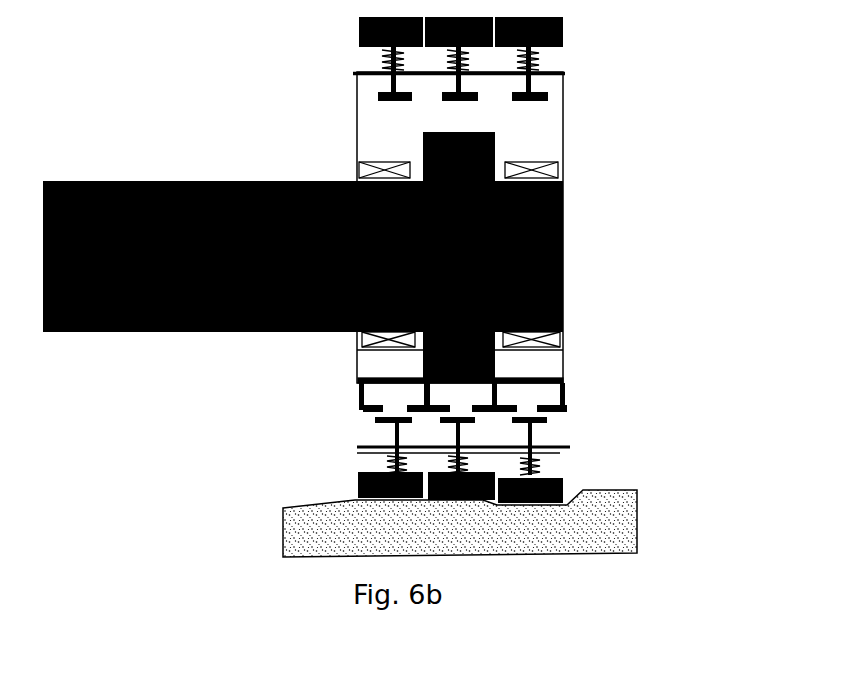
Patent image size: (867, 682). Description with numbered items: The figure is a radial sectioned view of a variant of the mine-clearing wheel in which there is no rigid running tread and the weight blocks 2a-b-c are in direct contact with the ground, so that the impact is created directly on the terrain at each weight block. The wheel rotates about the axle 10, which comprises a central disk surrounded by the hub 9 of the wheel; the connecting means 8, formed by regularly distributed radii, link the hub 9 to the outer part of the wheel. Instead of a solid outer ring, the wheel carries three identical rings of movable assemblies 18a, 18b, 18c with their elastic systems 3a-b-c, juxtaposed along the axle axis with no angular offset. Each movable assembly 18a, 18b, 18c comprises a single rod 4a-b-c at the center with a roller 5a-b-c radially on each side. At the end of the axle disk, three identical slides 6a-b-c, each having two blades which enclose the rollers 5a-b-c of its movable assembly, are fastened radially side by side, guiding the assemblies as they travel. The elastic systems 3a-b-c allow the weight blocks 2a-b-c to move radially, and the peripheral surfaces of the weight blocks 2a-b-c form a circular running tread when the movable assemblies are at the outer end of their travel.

The connecting means 8 is at (568, 135).
The central hub 9 is at (373, 167).
The axle 10 is at (212, 180).
The movable assembly 18a is at (410, 436).
The movable assembly 18b is at (478, 436).
The movable assembly 18c is at (549, 436).
The slides 6a-b-c is at (386, 406).
The rollers 5a-b-c is at (375, 424).
The rod 4a-b-c is at (393, 441).
The elastic systems 3a-b-c is at (389, 462).
The weight blocks 2a-b-c is at (356, 489).